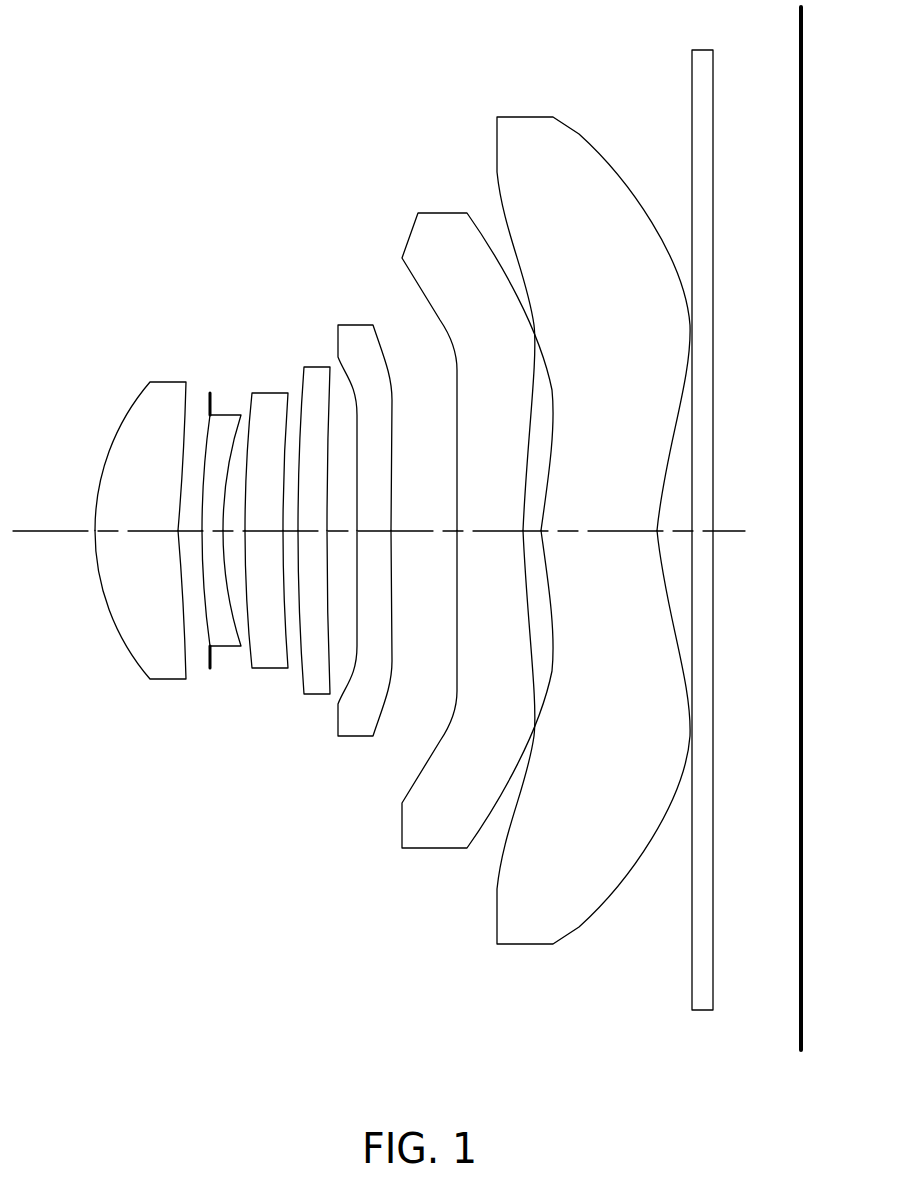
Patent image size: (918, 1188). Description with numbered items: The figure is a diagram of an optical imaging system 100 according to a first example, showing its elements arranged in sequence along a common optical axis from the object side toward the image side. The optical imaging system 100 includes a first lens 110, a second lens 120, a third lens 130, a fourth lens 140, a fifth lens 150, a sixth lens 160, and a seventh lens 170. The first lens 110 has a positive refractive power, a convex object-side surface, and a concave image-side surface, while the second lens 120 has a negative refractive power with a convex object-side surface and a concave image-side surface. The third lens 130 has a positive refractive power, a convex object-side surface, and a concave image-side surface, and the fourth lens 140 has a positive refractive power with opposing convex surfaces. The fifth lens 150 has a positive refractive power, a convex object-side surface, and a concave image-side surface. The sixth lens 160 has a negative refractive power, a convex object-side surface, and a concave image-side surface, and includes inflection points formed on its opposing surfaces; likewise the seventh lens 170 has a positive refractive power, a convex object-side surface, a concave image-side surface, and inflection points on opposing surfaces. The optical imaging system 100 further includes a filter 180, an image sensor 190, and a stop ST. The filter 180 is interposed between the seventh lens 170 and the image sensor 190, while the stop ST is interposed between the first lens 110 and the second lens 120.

The optical imaging system 100 is at (250, 176).
The first lens 110 is at (160, 672).
The second lens 120 is at (232, 647).
The third lens 130 is at (268, 660).
The fourth lens 140 is at (320, 687).
The fifth lens 150 is at (357, 730).
The sixth lens 160 is at (433, 835).
The seventh lens 170 is at (535, 932).
The filter 180 is at (698, 1002).
The image sensor 190 is at (800, 1033).
The stop ST is at (211, 393).